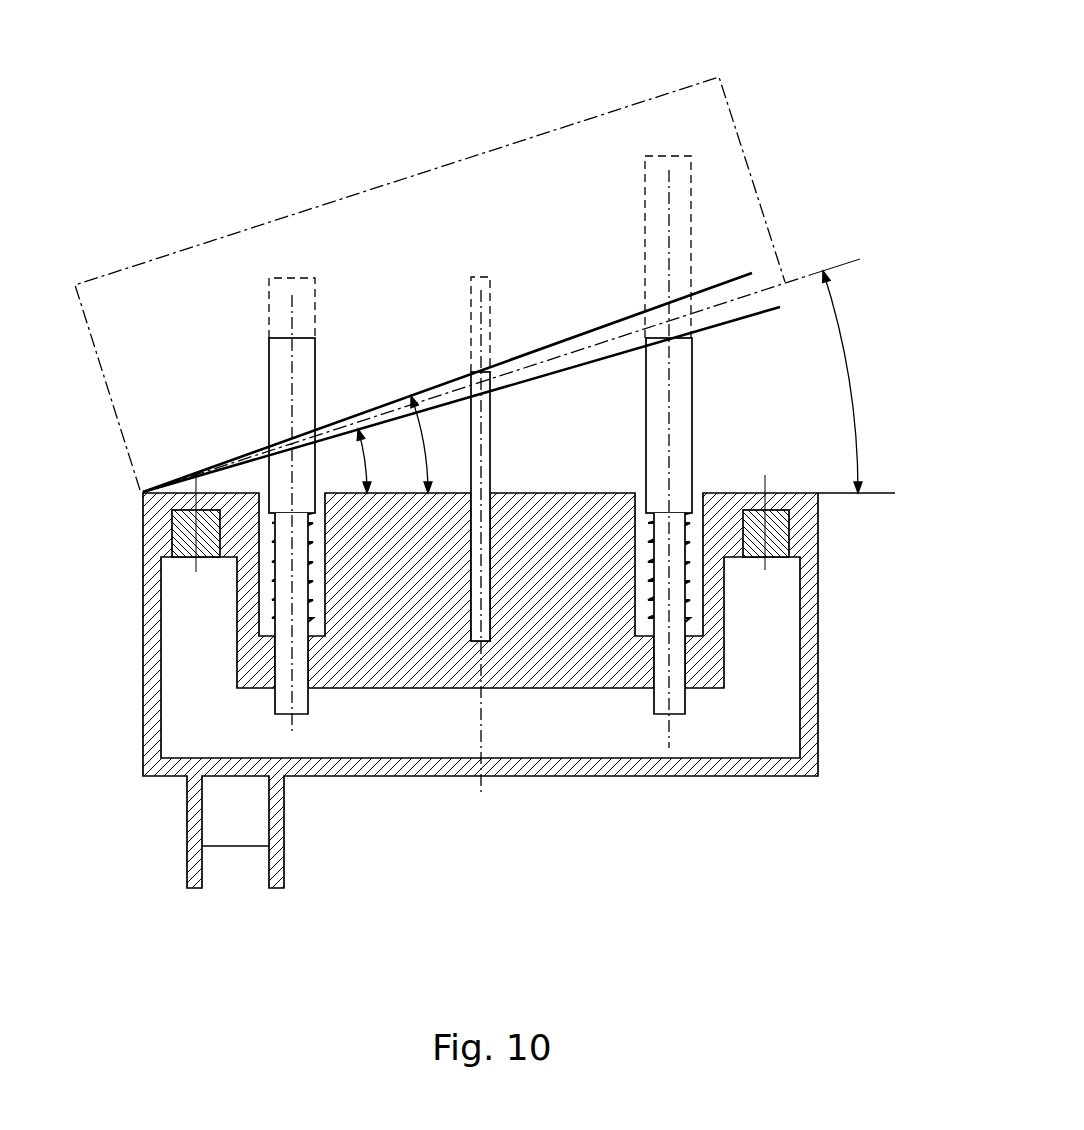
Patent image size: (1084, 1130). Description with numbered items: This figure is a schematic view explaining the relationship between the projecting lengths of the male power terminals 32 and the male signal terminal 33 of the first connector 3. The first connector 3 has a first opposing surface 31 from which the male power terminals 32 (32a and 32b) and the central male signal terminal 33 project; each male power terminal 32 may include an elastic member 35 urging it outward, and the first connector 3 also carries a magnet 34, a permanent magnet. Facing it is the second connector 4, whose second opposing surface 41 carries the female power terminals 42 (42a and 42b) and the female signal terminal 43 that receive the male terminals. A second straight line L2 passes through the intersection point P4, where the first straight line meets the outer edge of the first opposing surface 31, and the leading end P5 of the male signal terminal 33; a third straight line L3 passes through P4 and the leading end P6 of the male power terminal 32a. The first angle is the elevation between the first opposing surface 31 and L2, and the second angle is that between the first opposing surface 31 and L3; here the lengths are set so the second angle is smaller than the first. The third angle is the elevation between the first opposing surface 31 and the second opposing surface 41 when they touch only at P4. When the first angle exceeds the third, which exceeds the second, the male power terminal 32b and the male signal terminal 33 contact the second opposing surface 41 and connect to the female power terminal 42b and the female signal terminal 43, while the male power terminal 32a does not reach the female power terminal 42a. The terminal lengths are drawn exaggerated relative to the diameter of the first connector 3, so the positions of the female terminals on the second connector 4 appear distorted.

The first connector 3 is at (838, 559).
The first opposing surface 31 is at (600, 485).
The male power terminals 32 is at (550, 459).
The male power terminal 32a is at (692, 425).
The male power terminal 32b is at (304, 365).
The male signal terminal 33 is at (487, 457).
The magnet 34 is at (183, 533).
The elastic member 35 is at (690, 600).
The second connector 4 is at (625, 107).
The second opposing surface 41 is at (610, 351).
The female power terminals 42 is at (480, 245).
The female power terminal 42a is at (688, 156).
The female power terminal 42b is at (315, 287).
The female signal terminal 43 is at (492, 277).
The second straight line L2 is at (537, 348).
The third straight line L3 is at (757, 318).
The intersection point P4 is at (143, 490).
The leading end P5 is at (490, 430).
The leading end P6 is at (670, 338).